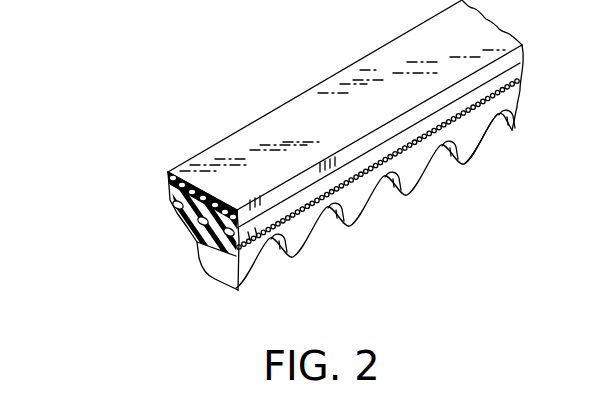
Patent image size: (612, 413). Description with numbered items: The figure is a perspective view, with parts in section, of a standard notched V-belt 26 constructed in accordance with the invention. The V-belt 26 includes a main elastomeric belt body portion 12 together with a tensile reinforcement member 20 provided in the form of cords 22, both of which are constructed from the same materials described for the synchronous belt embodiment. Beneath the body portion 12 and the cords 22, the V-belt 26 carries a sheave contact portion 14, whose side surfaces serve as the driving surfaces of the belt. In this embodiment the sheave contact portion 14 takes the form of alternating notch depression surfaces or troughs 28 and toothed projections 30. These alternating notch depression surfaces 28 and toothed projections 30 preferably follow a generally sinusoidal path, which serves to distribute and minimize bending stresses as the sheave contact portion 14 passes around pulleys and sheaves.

The notched V-belt 26 is at (249, 100).
The main elastomeric belt body portion 12 is at (325, 109).
The sheave contact portion 14 is at (350, 237).
The tensile reinforcement member 20 is at (158, 201).
The cords 22 is at (178, 219).
The notch depression surfaces 28 is at (442, 150).
The toothed projections 30 is at (466, 152).